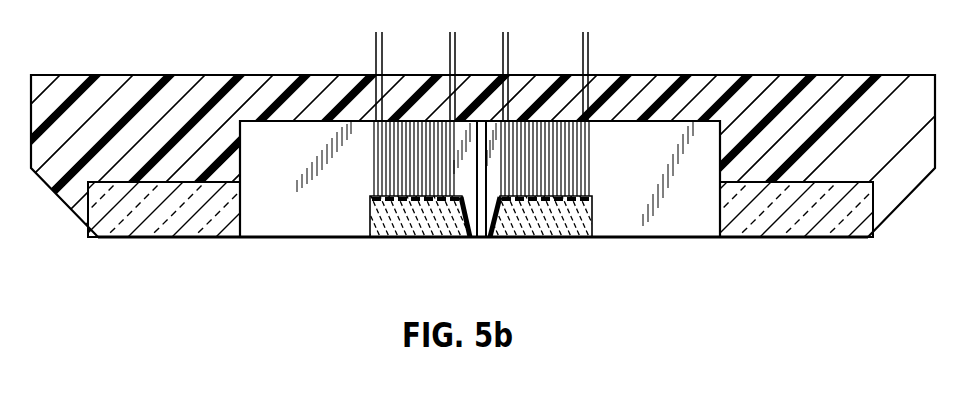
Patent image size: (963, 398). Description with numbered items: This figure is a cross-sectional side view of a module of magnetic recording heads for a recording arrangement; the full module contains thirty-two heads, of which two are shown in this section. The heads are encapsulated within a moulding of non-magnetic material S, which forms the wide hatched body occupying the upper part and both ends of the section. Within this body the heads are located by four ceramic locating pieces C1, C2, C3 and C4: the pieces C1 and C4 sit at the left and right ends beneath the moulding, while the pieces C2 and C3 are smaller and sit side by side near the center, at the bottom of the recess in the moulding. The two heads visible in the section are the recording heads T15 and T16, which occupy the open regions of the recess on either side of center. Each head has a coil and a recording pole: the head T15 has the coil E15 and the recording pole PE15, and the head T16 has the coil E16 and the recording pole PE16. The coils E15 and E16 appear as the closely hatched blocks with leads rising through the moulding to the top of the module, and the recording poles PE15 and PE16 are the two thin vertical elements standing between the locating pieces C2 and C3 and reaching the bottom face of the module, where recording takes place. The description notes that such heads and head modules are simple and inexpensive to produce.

The moulding of non-magnetic material S is at (133, 97).
The coil E15 is at (400, 137).
The coil E16 is at (553, 137).
The ceramic locating piece C1 is at (162, 226).
The ceramic locating piece C2 is at (404, 230).
The ceramic locating piece C3 is at (580, 228).
The ceramic locating piece C4 is at (792, 222).
The recording head T15 is at (311, 222).
The recording head T16 is at (692, 212).
The recording pole PE15 is at (474, 237).
The recording pole PE16 is at (487, 237).